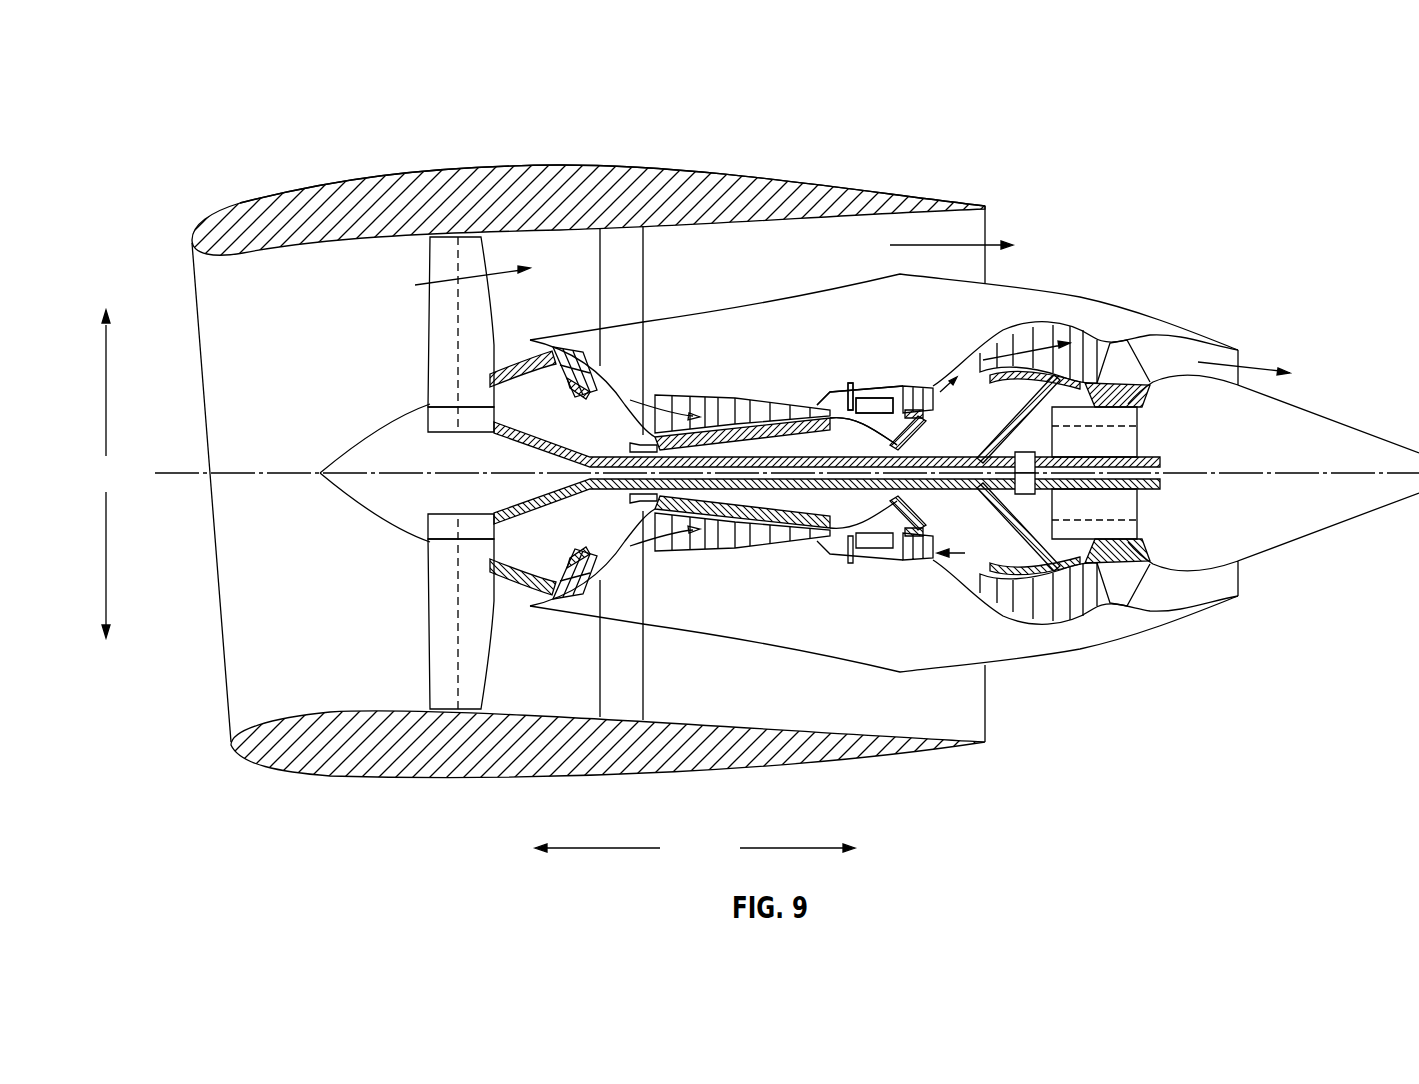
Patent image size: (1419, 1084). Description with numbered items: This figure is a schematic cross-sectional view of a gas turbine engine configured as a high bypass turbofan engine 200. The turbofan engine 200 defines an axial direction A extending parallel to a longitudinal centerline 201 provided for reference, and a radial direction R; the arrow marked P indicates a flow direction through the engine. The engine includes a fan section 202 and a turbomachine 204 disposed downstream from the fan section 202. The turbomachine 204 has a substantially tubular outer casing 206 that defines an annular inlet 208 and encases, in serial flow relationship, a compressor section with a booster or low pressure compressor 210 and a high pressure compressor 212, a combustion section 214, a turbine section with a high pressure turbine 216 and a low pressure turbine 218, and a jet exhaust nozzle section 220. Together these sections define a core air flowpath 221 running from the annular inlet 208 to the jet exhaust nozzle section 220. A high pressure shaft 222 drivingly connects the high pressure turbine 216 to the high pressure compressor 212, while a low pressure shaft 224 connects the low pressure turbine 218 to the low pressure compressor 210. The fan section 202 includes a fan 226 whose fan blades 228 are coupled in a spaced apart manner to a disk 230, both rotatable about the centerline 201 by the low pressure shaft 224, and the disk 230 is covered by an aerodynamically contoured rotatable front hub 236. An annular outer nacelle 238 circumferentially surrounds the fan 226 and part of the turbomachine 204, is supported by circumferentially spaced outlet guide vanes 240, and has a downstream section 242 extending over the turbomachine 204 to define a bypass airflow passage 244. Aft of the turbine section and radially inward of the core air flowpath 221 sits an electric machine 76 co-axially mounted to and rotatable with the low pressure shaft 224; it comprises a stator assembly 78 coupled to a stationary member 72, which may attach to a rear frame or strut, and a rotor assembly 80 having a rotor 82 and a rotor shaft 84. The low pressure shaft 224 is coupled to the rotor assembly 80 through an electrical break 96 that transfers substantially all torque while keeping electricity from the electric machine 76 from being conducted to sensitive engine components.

The high bypass turbofan engine 200 is at (1143, 178).
The longitudinal centerline 201 is at (1208, 473).
The fan section 202 is at (378, 257).
The turbomachine 204 is at (764, 280).
The outer casing 206 is at (827, 662).
The annular inlet 208 is at (545, 590).
The low pressure compressor 210 is at (575, 608).
The high pressure compressor 212 is at (678, 537).
The combustion section 214 is at (849, 561).
The high pressure turbine 216 is at (980, 556).
The low pressure turbine 218 is at (1075, 593).
The jet exhaust nozzle section 220 is at (1140, 589).
The core air flowpath 221 is at (627, 559).
The high pressure shaft 222 is at (873, 403).
The low pressure shaft 224 is at (935, 458).
The fan 226 is at (380, 349).
The fan blades 228 is at (425, 643).
The disk 230 is at (438, 423).
The rotatable front hub 236 is at (337, 493).
The outer nacelle 238 is at (487, 790).
The outlet guide vanes 240 is at (643, 262).
The downstream section 242 is at (895, 193).
The bypass airflow passage 244 is at (815, 258).
The stationary member 72 is at (1122, 555).
The electric machine 76 is at (1147, 403).
The stator assembly 78 is at (1100, 403).
The rotor assembly 80 is at (1073, 617).
The rotor 82 is at (1122, 503).
The rotor shaft 84 is at (1137, 445).
The electrical break 96 is at (1027, 450).
The flow direction P is at (462, 262).
The radial direction R is at (106, 474).
The axial direction A is at (695, 848).